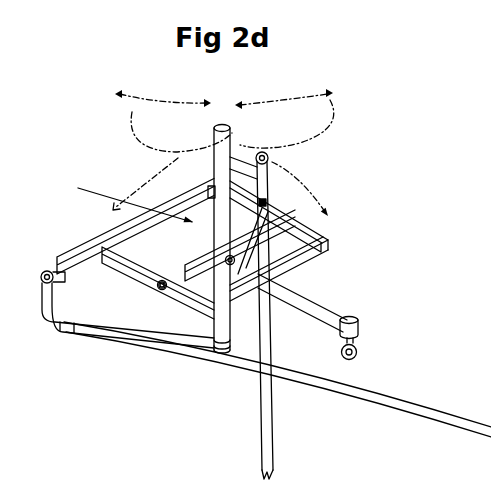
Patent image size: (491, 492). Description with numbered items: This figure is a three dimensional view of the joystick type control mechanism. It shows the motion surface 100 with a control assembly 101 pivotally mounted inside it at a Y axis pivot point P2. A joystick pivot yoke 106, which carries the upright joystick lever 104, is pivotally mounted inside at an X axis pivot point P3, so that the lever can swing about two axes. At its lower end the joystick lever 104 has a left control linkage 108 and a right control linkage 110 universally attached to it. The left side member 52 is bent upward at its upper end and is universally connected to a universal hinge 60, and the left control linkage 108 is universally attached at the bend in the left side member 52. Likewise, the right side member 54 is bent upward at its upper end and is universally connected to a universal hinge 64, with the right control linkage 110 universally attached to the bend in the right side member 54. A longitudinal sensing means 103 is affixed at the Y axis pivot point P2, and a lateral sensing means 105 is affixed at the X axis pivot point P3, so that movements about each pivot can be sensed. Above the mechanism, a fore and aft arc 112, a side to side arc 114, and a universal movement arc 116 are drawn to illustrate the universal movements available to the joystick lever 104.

The left side member 52 is at (236, 380).
The right side member 54 is at (281, 418).
The universal hinge 60 is at (43, 266).
The universal hinge 64 is at (272, 159).
The motion surface 100 is at (330, 230).
The control assembly 101 is at (109, 191).
The longitudinal sensing means 103 is at (150, 298).
The joystick lever 104 is at (210, 163).
The lateral sensing means 105 is at (284, 278).
The joystick pivot yoke 106 is at (200, 262).
The left control linkage 108 is at (158, 291).
The right control linkage 110 is at (236, 320).
The fore and aft arc 112 is at (160, 100).
The side to side arc 114 is at (338, 93).
The universal movement arc 116 is at (318, 128).
The Y axis pivot point P2 is at (161, 291).
The X axis pivot point P3 is at (235, 260).